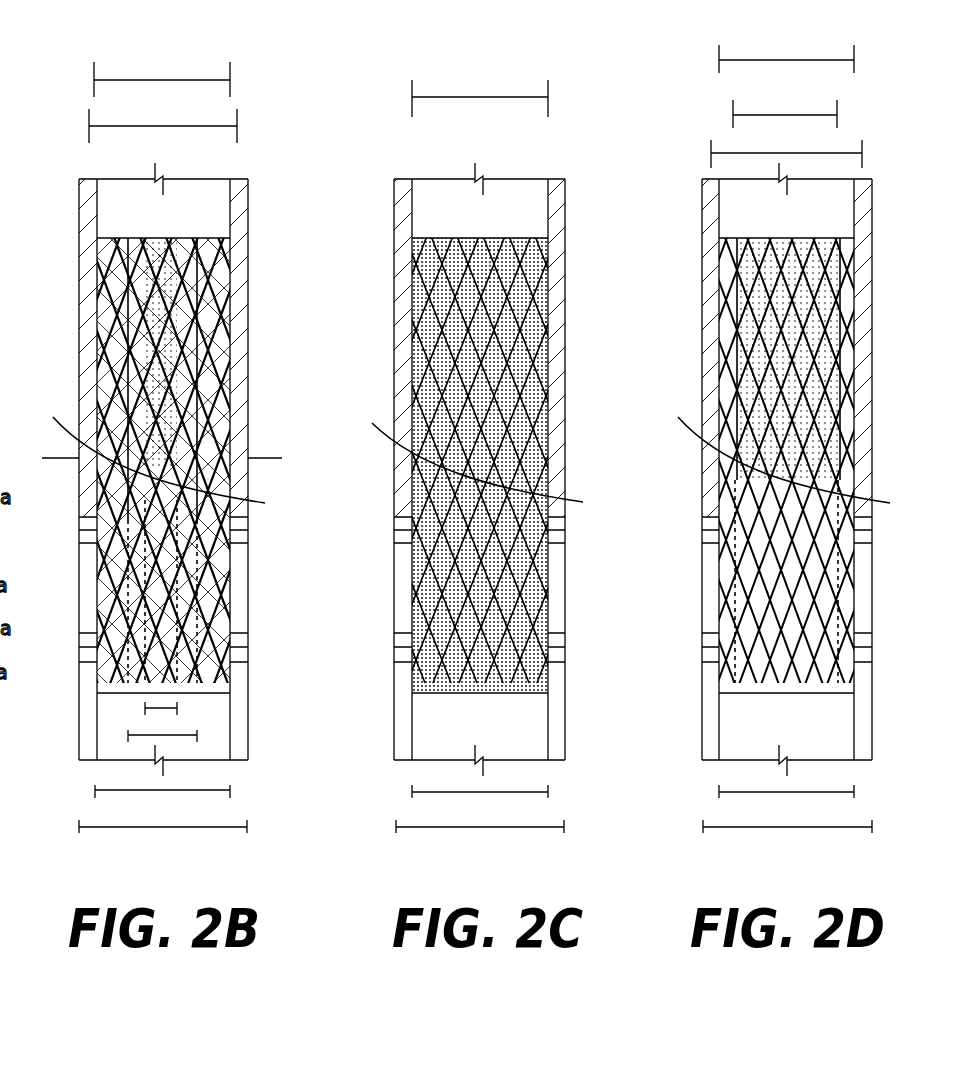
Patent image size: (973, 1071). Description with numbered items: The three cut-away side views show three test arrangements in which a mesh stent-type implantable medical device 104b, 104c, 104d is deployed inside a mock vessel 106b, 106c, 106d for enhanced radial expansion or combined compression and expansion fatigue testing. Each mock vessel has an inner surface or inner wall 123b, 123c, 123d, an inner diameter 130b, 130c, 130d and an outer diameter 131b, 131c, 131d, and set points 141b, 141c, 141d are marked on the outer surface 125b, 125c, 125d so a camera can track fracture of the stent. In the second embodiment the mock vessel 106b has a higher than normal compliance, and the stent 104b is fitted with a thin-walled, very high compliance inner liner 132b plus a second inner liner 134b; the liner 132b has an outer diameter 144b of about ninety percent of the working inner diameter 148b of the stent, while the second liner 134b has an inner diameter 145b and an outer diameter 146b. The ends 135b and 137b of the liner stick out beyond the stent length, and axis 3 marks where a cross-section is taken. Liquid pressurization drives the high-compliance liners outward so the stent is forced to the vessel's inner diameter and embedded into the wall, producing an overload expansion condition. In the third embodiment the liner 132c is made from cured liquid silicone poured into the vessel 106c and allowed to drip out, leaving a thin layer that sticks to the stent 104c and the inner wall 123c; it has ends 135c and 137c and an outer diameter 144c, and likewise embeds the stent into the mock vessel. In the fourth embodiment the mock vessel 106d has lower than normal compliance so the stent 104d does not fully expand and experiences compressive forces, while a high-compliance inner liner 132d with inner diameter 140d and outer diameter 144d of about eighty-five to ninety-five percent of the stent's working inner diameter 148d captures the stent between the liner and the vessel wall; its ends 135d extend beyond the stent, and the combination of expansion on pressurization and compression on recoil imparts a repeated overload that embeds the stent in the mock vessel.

In FIG. 2B, the section axis 3 is at (165, 458).
In FIG. 2B, the stent-type implantable medical device 104b is at (217, 537).
In FIG. 2C, the stent-type implantable medical device 104c is at (523, 543).
In FIG. 2D, the stent-type implantable medical device 104d is at (830, 367).
In FIG. 2B, the mock vessel 106b is at (62, 338).
In FIG. 2C, the mock vessel 106c is at (378, 338).
In FIG. 2D, the mock vessel 106d is at (688, 340).
In FIG. 2B, the inner surface 123b is at (230, 210).
In FIG. 2C, the inner wall 123c is at (548, 210).
In FIG. 2D, the inner diameter 123d is at (854, 212).
In FIG. 2B, the outer surface 125b is at (248, 722).
In FIG. 2C, the outer surface 125c is at (565, 700).
In FIG. 2D, the outer surface 125d is at (872, 722).
In FIG. 2B, the inner diameter 130b is at (158, 80).
In FIG. 2C, the inner diameter 130c is at (475, 97).
In FIG. 2D, the inner diameter 130d is at (803, 60).
In FIG. 2B, the outer diameter 131b is at (170, 828).
In FIG. 2C, the outer diameter 131c is at (488, 827).
In FIG. 2D, the outer diameter 131d is at (795, 828).
In FIG. 2B, the inner liner 132b is at (107, 238).
In FIG. 2C, the inner liner 132c is at (425, 238).
In FIG. 2D, the inner liner 132d is at (735, 238).
In FIG. 2B, the second inner liner 134b is at (180, 238).
In FIG. 2B, the end of inner liner 135b is at (208, 238).
In FIG. 2C, the end of inner liner 135c is at (527, 238).
In FIG. 2D, the ends of inner liner 135d is at (833, 238).
In FIG. 2B, the end of inner liner 137b is at (143, 693).
In FIG. 2C, the end of inner liner 137c is at (470, 695).
In FIG. 2D, the inner diameter of inner liner 140d is at (783, 115).
In FIG. 2B, the set points 141b is at (79, 527).
In FIG. 2C, the set points 141c is at (565, 533).
In FIG. 2D, the set points 141d is at (702, 527).
In FIG. 2B, the outer diameter of inner liner 144b is at (197, 792).
In FIG. 2C, the outer diameter of inner liner 144c is at (515, 793).
In FIG. 2D, the outer diameter of inner liner 144d is at (820, 793).
In FIG. 2B, the inner diameter of second inner liner 145b is at (167, 708).
In FIG. 2B, the outer diameter of second inner liner 146b is at (180, 735).
In FIG. 2B, the working inner diameter of stent 148b is at (210, 126).
In FIG. 2D, the working inner diameter of stent 148d is at (768, 153).